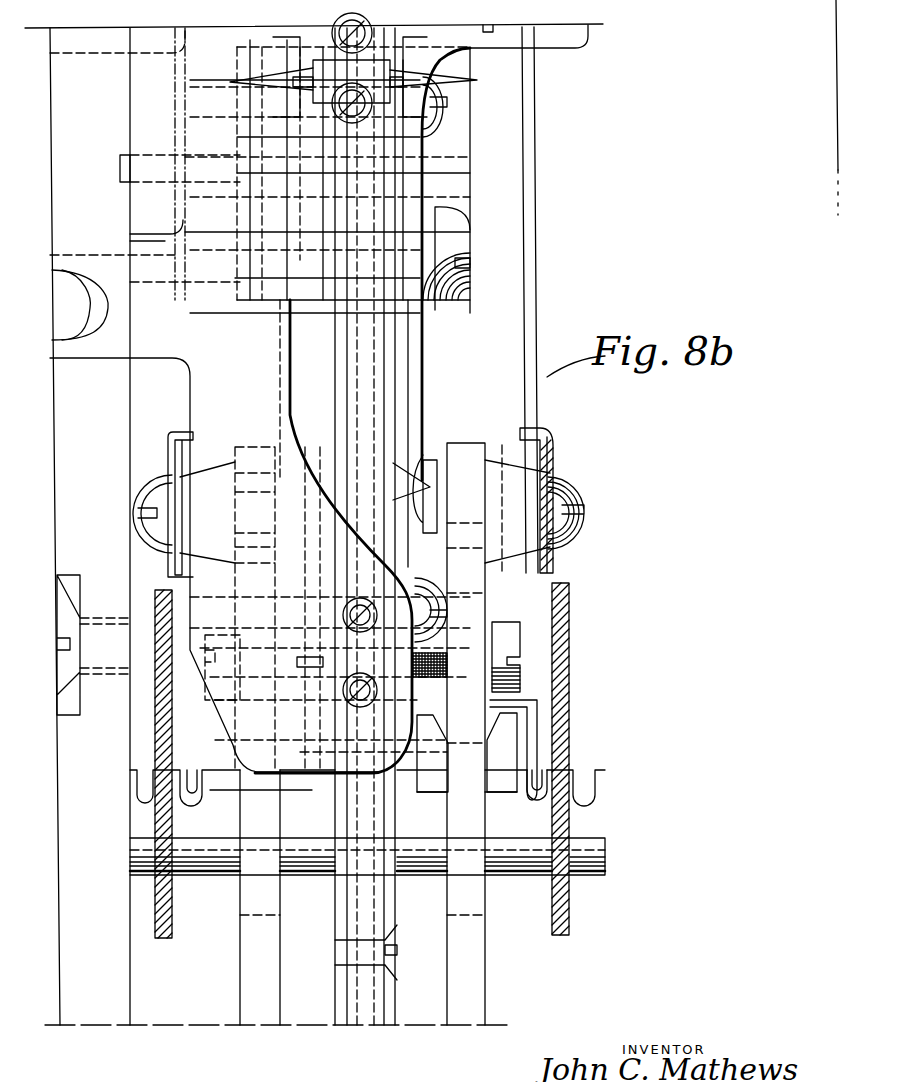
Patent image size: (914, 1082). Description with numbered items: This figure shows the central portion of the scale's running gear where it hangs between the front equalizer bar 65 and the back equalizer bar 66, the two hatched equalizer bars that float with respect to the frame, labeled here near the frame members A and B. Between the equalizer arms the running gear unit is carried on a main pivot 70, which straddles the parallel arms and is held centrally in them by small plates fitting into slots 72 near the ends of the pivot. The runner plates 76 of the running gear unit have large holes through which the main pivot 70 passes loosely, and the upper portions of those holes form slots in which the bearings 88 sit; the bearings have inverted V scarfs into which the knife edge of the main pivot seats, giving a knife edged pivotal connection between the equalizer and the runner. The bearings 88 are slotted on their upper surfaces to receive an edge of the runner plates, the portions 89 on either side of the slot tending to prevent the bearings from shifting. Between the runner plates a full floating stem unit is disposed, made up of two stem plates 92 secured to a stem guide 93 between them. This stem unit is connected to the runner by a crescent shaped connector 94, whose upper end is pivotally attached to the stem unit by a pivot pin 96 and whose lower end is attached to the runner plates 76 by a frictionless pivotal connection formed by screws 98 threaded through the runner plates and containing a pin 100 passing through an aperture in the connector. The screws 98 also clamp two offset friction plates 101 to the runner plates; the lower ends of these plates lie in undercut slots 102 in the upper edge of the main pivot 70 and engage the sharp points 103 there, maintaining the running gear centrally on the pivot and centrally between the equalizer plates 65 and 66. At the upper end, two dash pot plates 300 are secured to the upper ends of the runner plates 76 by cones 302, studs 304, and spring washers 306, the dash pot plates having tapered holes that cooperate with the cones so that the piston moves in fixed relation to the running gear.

The frame member A is at (70, 817).
The upper frame flange B is at (563, 48).
The stem plates 92 is at (300, 192).
The pivot pin 96 is at (427, 318).
The crescent shaped connector 94 is at (363, 393).
The stem guide 93 is at (367, 987).
The dash pot plates 300 is at (527, 175).
The spring washers 306 is at (552, 435).
The studs 304 is at (580, 515).
The cones 302 is at (502, 550).
The runner plates 76 is at (263, 1003).
The main pivot 70 is at (597, 857).
The front equalizer bar 65 is at (168, 938).
The back equalizer bar 66 is at (565, 912).
The slots 72 is at (600, 780).
The screws 98 is at (507, 641).
The offset friction plates 101 is at (535, 715).
The bearings 88 is at (503, 758).
The undercut slots 102 is at (560, 770).
The sharp points 103 is at (527, 780).
The portions of the bearings 89 is at (495, 732).
The pin 100 is at (320, 665).